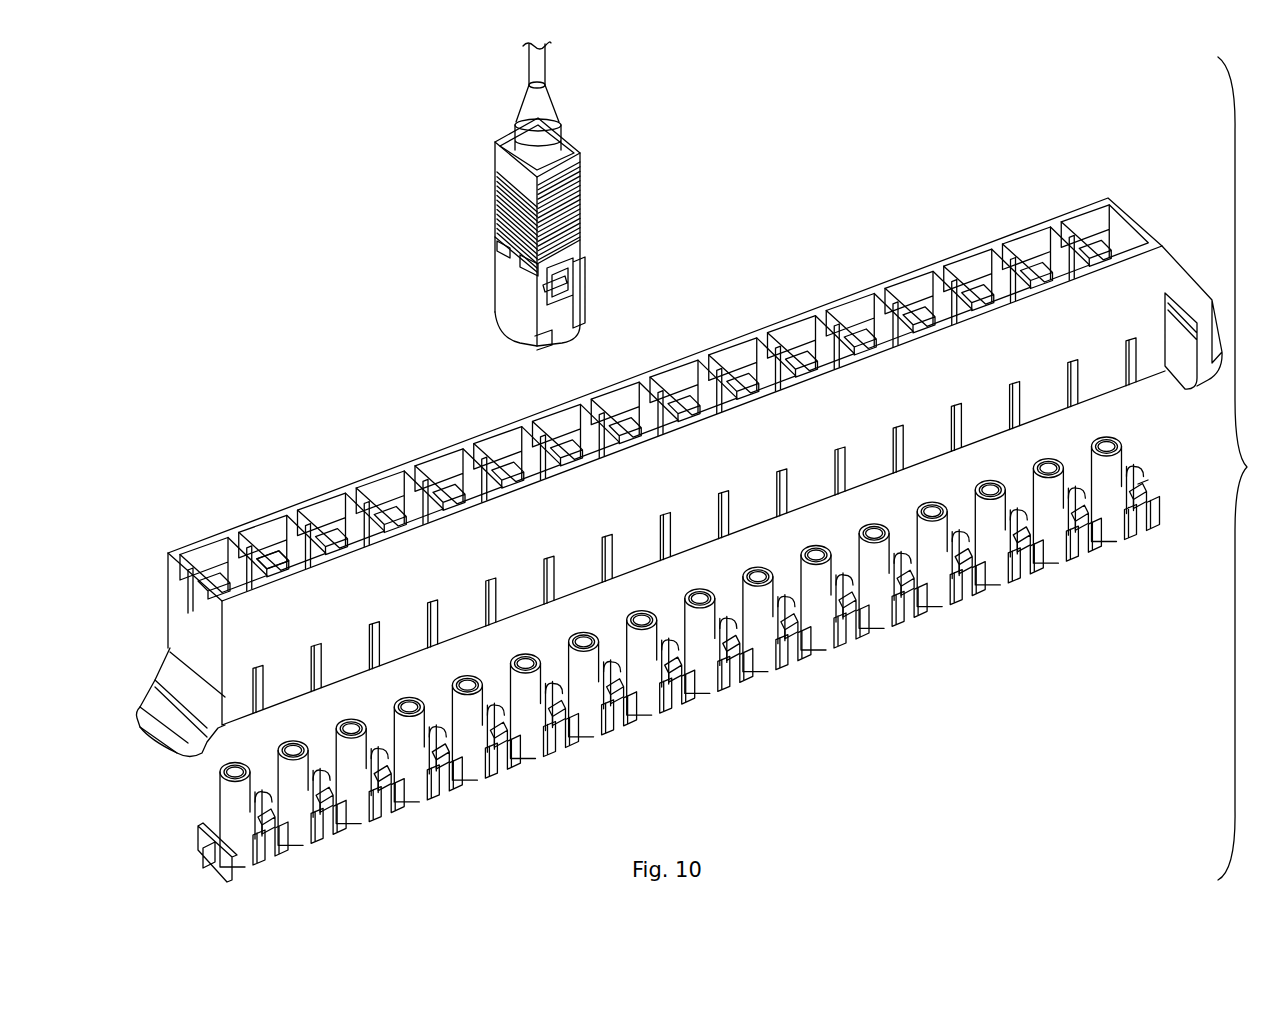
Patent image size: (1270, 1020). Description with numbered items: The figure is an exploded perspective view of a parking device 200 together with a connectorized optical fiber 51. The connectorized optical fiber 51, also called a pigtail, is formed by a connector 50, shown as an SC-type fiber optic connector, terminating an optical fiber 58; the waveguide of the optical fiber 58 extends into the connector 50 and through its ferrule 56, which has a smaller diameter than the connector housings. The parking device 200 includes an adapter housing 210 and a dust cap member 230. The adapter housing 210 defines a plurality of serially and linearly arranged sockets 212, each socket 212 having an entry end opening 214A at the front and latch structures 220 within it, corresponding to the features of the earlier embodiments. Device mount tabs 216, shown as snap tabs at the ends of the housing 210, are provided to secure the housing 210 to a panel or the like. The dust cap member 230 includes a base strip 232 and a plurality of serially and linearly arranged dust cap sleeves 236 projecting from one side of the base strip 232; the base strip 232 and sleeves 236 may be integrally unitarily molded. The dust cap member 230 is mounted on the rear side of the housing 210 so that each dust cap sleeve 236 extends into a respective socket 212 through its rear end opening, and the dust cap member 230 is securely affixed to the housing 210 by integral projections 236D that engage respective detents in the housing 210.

The parking device 200 is at (400, 138).
The optical fiber 58 is at (541, 71).
The connectorized optical fiber 51 is at (584, 193).
The connector 50 is at (598, 236).
The ferrule 56 is at (567, 342).
The adapter housing 210 is at (160, 565).
The sockets 212 is at (415, 437).
The entry end opening 214A is at (540, 405).
The device mount tabs 216 is at (148, 713).
The latch structures 220 is at (278, 556).
The dust cap member 230 is at (190, 860).
The base strip 232 is at (390, 817).
The dust cap sleeves 236 is at (417, 797).
The integral projections 236D is at (1136, 485).